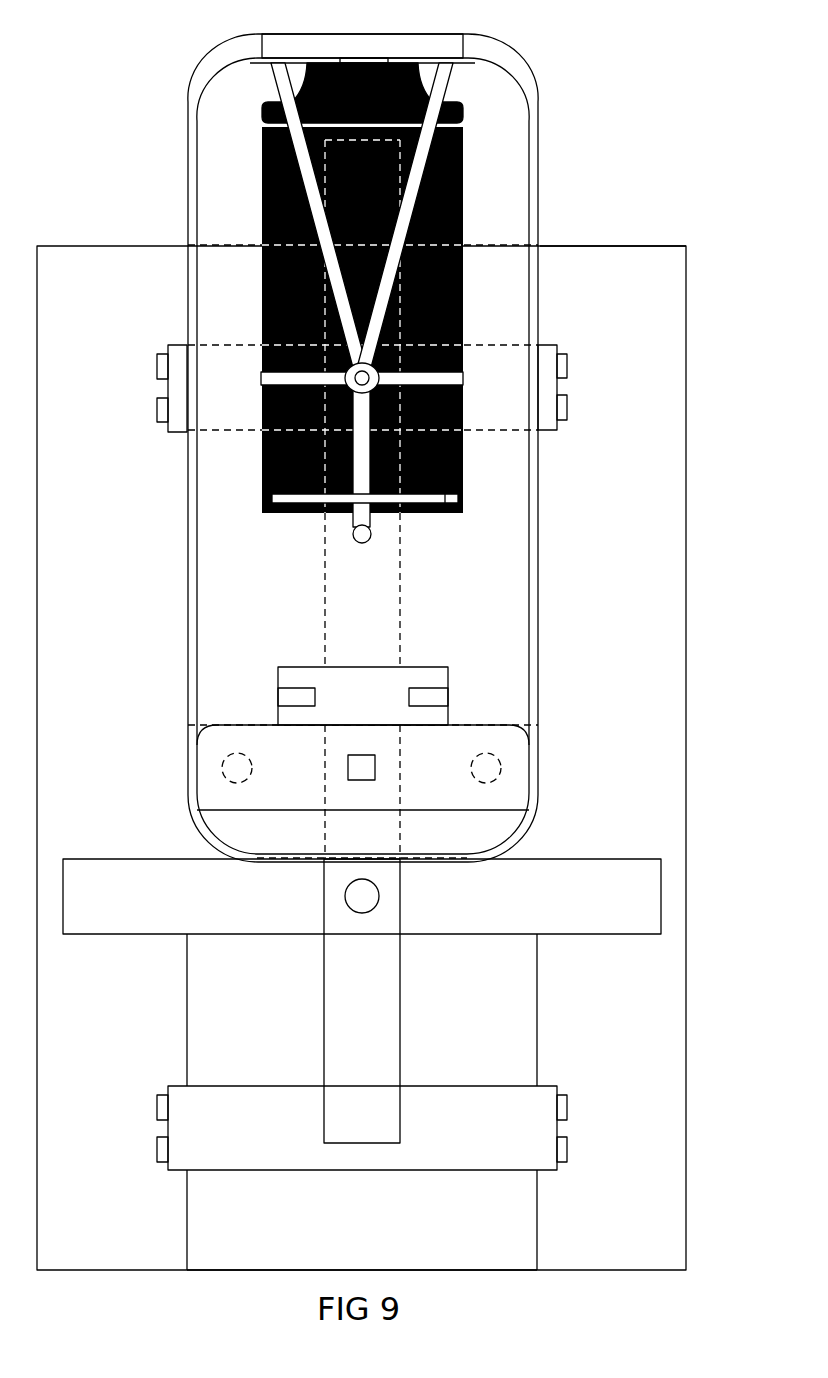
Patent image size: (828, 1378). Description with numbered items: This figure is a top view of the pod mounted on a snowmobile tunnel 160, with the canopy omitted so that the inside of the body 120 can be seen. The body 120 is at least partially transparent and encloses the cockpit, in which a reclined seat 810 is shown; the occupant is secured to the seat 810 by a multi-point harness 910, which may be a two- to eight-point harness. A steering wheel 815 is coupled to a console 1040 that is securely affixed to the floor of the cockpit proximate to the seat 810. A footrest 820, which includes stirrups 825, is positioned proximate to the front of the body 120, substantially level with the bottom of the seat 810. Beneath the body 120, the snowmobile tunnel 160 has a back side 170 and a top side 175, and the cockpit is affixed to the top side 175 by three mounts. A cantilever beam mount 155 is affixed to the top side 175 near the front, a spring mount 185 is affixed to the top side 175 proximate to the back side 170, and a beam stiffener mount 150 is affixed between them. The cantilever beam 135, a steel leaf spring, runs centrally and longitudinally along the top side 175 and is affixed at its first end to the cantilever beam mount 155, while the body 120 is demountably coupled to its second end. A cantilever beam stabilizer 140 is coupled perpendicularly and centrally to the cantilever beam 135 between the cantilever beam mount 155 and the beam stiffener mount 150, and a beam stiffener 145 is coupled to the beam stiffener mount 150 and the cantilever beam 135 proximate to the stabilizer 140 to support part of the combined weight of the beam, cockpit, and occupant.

The body 120 is at (188, 130).
The cantilever beam 135 is at (383, 1017).
The cantilever beam stabilizer 140 is at (543, 907).
The beam stiffener 145 is at (360, 781).
The beam stiffener mount 150 is at (512, 791).
The cantilever beam mount 155 is at (503, 1136).
The snowmobile tunnel 160 is at (120, 297).
The back side 170 is at (597, 240).
The top side 175 is at (352, 1256).
The spring mount 185 is at (567, 413).
The seat 810 is at (463, 320).
The steering wheel 815 is at (463, 500).
The footrest 820 is at (384, 667).
The stirrups 825 is at (448, 696).
The multi-point harness 910 is at (261, 375).
The console 1040 is at (371, 531).